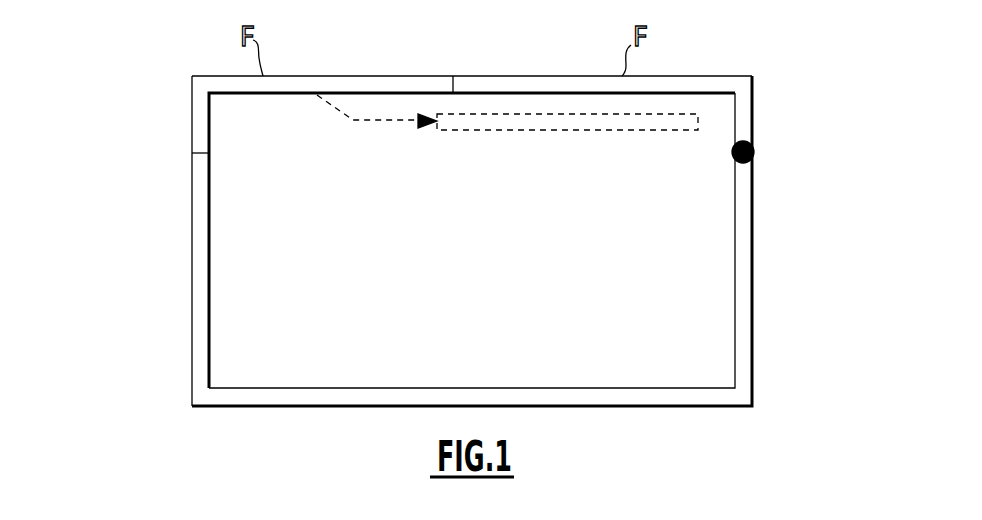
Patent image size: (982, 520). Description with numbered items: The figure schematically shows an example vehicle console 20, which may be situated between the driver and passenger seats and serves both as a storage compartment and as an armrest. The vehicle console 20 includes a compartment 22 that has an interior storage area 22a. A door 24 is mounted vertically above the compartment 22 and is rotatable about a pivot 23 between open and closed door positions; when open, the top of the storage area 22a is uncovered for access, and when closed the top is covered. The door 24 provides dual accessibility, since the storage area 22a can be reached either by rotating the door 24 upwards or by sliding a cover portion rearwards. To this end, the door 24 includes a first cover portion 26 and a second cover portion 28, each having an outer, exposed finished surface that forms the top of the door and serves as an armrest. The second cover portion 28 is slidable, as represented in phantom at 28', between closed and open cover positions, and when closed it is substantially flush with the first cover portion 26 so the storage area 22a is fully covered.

The vehicle console 20 is at (118, 326).
The compartment 22 is at (752, 355).
The interior storage area 22a is at (693, 308).
The pivot 23 is at (754, 152).
The door 24 is at (727, 76).
The first cover portion 26 is at (535, 84).
The second cover portion 28 is at (322, 75).
The slid second cover portion 28' is at (622, 133).